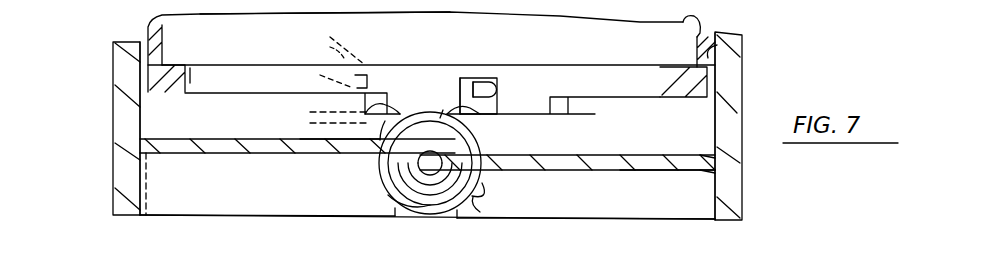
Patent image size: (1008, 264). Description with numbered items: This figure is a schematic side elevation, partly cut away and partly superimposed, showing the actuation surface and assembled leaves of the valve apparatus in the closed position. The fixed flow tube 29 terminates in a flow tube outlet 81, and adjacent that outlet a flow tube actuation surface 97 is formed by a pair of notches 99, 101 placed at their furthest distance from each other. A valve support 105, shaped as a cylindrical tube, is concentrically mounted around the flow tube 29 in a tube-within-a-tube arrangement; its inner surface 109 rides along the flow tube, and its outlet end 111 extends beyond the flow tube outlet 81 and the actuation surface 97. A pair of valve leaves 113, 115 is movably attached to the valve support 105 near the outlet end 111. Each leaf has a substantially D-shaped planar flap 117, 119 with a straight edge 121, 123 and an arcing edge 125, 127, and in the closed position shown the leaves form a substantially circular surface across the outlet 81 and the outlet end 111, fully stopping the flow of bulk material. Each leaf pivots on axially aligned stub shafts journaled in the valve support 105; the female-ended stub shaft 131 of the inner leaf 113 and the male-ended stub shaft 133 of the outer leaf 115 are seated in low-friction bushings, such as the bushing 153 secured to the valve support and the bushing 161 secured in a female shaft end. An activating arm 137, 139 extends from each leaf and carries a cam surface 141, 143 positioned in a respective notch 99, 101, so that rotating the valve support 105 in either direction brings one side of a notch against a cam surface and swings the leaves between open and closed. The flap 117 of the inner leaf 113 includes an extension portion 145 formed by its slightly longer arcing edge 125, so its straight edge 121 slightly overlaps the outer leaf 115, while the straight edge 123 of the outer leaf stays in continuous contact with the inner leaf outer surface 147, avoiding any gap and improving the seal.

The flow tube 29 is at (697, 25).
The flow tube outlet 81 is at (173, 98).
The flow tube actuation surface 97 is at (500, 42).
The notch 99 is at (497, 82).
The notch 101 is at (340, 85).
The valve support 105 is at (733, 88).
The inner surface 109 is at (710, 50).
The outlet end 111 is at (620, 219).
The valve leaf 113 is at (175, 153).
The valve leaf 115 is at (690, 175).
The planar flap 117 is at (198, 153).
The planar flap 119 is at (652, 172).
The straight edge 121 is at (480, 147).
The straight edge 123 is at (411, 178).
The arcing edge 125 is at (143, 140).
The arcing edge 127 is at (717, 164).
The stub shaft 131 is at (400, 176).
The stub shaft 133 is at (405, 170).
The activating arm 137 is at (310, 120).
The activating arm 139 is at (488, 124).
The cam surface 141 is at (410, 73).
The cam surface 143 is at (475, 112).
The extension portion 145 is at (442, 118).
The outer surface 147 is at (335, 153).
The bushing 153 is at (488, 183).
The bushing 161 is at (473, 197).